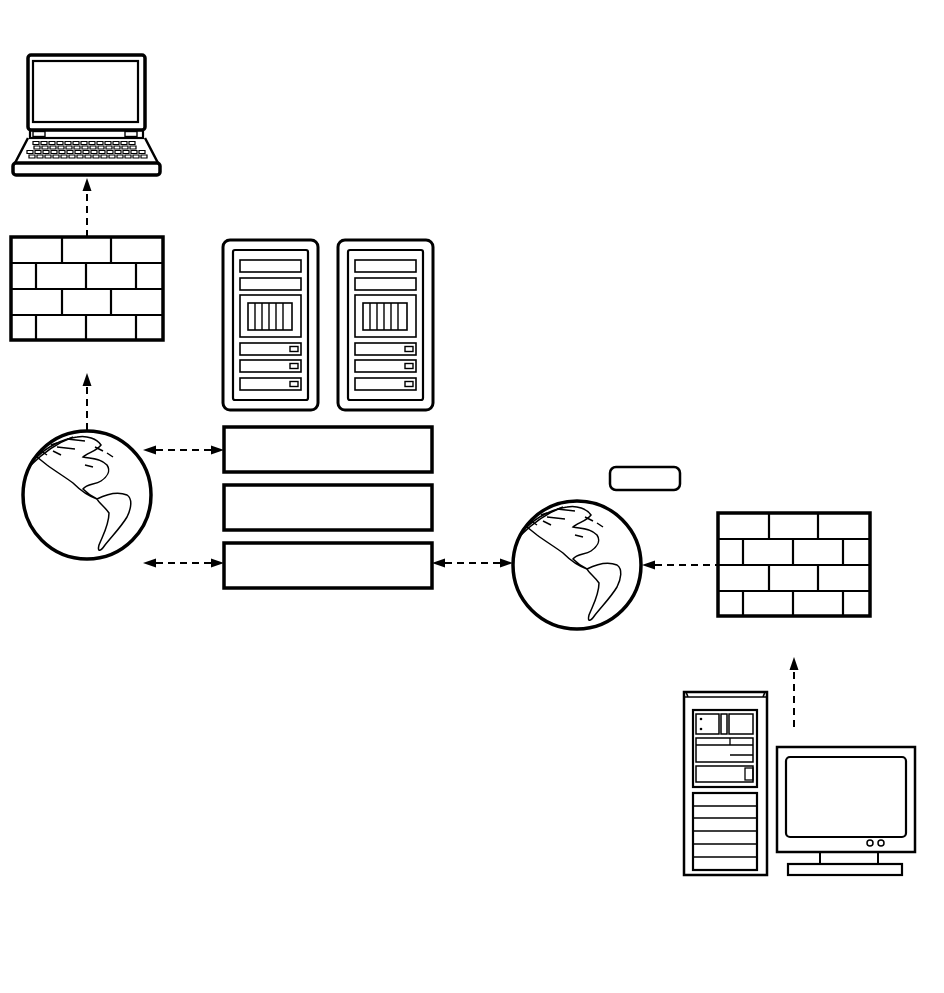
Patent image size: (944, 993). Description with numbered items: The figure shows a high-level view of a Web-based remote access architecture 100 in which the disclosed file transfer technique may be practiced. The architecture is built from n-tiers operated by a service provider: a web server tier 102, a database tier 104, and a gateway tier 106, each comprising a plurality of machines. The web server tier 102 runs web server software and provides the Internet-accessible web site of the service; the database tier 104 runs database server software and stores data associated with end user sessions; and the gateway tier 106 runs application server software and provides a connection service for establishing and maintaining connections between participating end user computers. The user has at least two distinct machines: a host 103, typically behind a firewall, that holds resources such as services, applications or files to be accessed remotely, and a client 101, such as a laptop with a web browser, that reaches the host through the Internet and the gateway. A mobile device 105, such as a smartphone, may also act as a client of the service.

The remote access architecture 100 is at (577, 182).
The client 101 is at (68, 55).
The web server tier 102 is at (433, 443).
The host 103 is at (857, 876).
The database tier 104 is at (433, 508).
The mobile device 105 is at (645, 466).
The gateway tier 106 is at (338, 590).